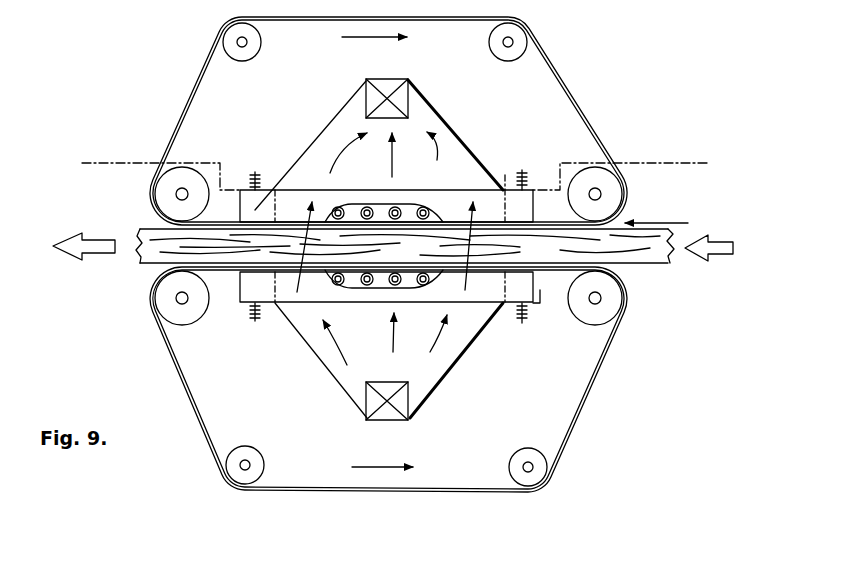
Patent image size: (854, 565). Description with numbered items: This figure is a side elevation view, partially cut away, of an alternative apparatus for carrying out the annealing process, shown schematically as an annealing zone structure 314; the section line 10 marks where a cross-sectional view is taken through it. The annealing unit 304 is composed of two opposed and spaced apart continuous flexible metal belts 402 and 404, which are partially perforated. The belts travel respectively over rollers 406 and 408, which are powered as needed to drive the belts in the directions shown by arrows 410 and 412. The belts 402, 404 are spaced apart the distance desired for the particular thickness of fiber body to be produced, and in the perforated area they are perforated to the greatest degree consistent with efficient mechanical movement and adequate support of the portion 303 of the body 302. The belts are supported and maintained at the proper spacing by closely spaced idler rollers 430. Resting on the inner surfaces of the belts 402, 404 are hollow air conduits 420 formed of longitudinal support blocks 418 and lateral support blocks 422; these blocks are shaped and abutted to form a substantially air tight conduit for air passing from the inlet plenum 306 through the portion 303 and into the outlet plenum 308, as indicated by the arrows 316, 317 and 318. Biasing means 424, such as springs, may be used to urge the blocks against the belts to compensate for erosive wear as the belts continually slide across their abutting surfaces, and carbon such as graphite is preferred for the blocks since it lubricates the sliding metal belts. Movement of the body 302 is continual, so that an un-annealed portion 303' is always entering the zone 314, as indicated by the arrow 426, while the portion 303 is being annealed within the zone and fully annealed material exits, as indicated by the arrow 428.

The section line 10- 10 is at (95, 195).
The body 302 is at (382, 379).
The portion of body being annealed 303 is at (422, 269).
The un-annealed portion 303' is at (687, 269).
The annealing unit 304 is at (426, 121).
The inlet plenum 306 is at (428, 392).
The outlet plenum 308 is at (428, 110).
The annealing zone structure 314 is at (675, 225).
The air flow arrow 316 is at (460, 362).
The air flow arrow 317 is at (505, 305).
The air flow arrow 318 is at (437, 157).
The continuous flexible metal belt 402 is at (573, 430).
The continuous flexible metal belt 404 is at (597, 132).
The rollers 406 is at (182, 317).
The rollers 408 is at (249, 55).
The belt direction arrow 410 is at (365, 470).
The belt direction arrow 412 is at (355, 40).
The longitudinal support blocks 418 is at (287, 200).
The hollow air conduits 420 is at (463, 190).
The lateral support blocks 422 is at (527, 318).
The biasing means 424 is at (252, 177).
The entry arrow 426 is at (718, 257).
The exit arrow 428 is at (96, 240).
The idler rollers 430 is at (398, 207).